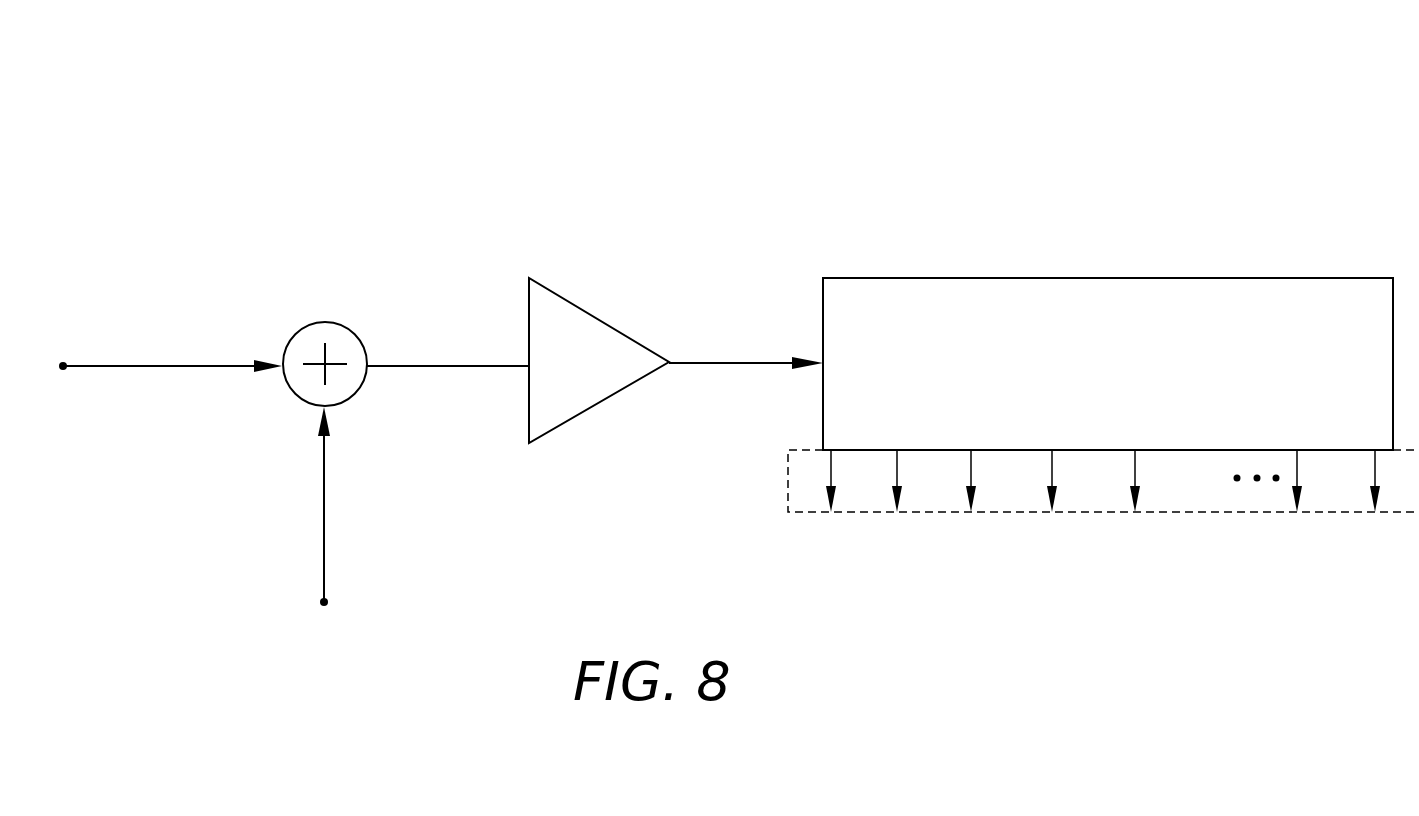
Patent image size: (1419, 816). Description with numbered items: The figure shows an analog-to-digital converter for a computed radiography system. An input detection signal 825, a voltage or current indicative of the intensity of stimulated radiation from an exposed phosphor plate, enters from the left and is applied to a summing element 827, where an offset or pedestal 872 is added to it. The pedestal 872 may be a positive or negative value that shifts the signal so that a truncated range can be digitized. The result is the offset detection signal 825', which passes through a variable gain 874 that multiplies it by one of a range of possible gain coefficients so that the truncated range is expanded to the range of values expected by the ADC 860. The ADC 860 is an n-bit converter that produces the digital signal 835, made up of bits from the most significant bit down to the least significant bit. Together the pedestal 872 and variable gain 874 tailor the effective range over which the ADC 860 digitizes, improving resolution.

The input detection signal 825 is at (170, 333).
The summing element 827 is at (300, 321).
The offset detection signal 825' is at (448, 332).
The variable gain 874 is at (573, 300).
The analog-to-digital converter (ADC) 860 is at (1013, 278).
The pedestal 872 is at (324, 512).
The digital signal 835 is at (1208, 513).